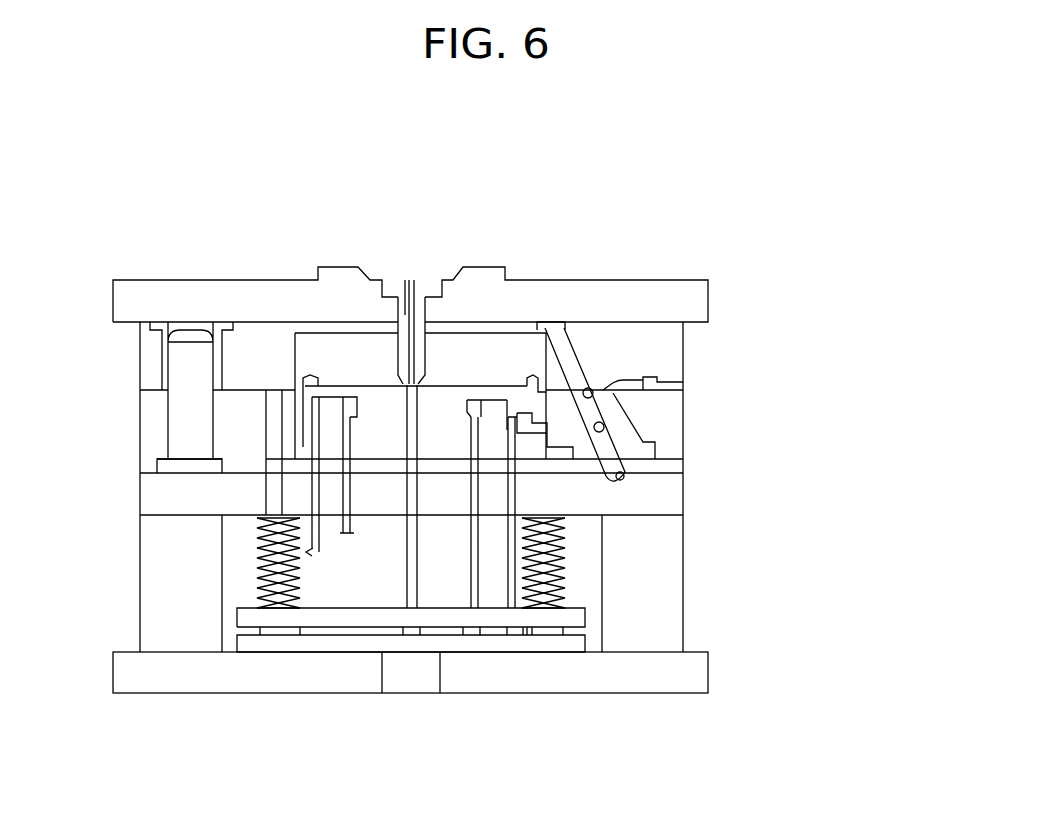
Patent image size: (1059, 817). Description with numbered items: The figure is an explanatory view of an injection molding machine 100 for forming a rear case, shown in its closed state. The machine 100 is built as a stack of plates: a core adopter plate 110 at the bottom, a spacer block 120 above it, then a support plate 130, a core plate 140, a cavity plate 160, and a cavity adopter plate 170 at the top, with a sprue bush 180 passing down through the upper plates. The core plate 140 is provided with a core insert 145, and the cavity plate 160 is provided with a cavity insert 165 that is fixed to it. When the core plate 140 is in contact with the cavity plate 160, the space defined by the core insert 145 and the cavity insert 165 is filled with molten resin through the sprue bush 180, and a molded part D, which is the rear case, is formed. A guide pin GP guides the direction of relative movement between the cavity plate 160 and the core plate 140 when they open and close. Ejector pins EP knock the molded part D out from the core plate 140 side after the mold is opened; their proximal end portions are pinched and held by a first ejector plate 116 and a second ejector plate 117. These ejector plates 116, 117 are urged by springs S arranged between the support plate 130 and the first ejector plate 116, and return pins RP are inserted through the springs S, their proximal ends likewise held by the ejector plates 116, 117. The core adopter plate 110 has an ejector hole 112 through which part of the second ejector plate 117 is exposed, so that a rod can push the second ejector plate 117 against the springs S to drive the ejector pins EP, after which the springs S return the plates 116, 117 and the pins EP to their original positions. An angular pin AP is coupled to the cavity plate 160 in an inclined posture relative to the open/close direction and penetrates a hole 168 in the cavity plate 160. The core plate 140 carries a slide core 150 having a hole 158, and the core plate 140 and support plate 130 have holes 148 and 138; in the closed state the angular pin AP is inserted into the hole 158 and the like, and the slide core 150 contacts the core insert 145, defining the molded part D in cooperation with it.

The injection molding machine 100 is at (670, 240).
The core adopter plate 110 is at (708, 670).
The ejector hole 112 is at (383, 678).
The first ejector plate 116 is at (307, 618).
The second ejector plate 117 is at (342, 640).
The spacer block 120 is at (660, 583).
The support plate 130 is at (663, 493).
The hole 138 is at (615, 483).
The core plate 140 is at (670, 463).
The core insert 145 is at (388, 430).
The hole 148 is at (628, 478).
The slide core 150 is at (623, 437).
The hole 158 is at (623, 420).
The cavity plate 160 is at (667, 345).
The cavity insert 165 is at (454, 350).
The hole 168 is at (657, 380).
The cavity adopter plate 170 is at (687, 302).
The sprue bush 180 is at (404, 317).
The guide pin GP is at (190, 383).
The return pin RP is at (555, 565).
The ejector pin EP is at (512, 590).
The spring S is at (563, 565).
The angular pin AP is at (575, 370).
The molded part D is at (512, 371).